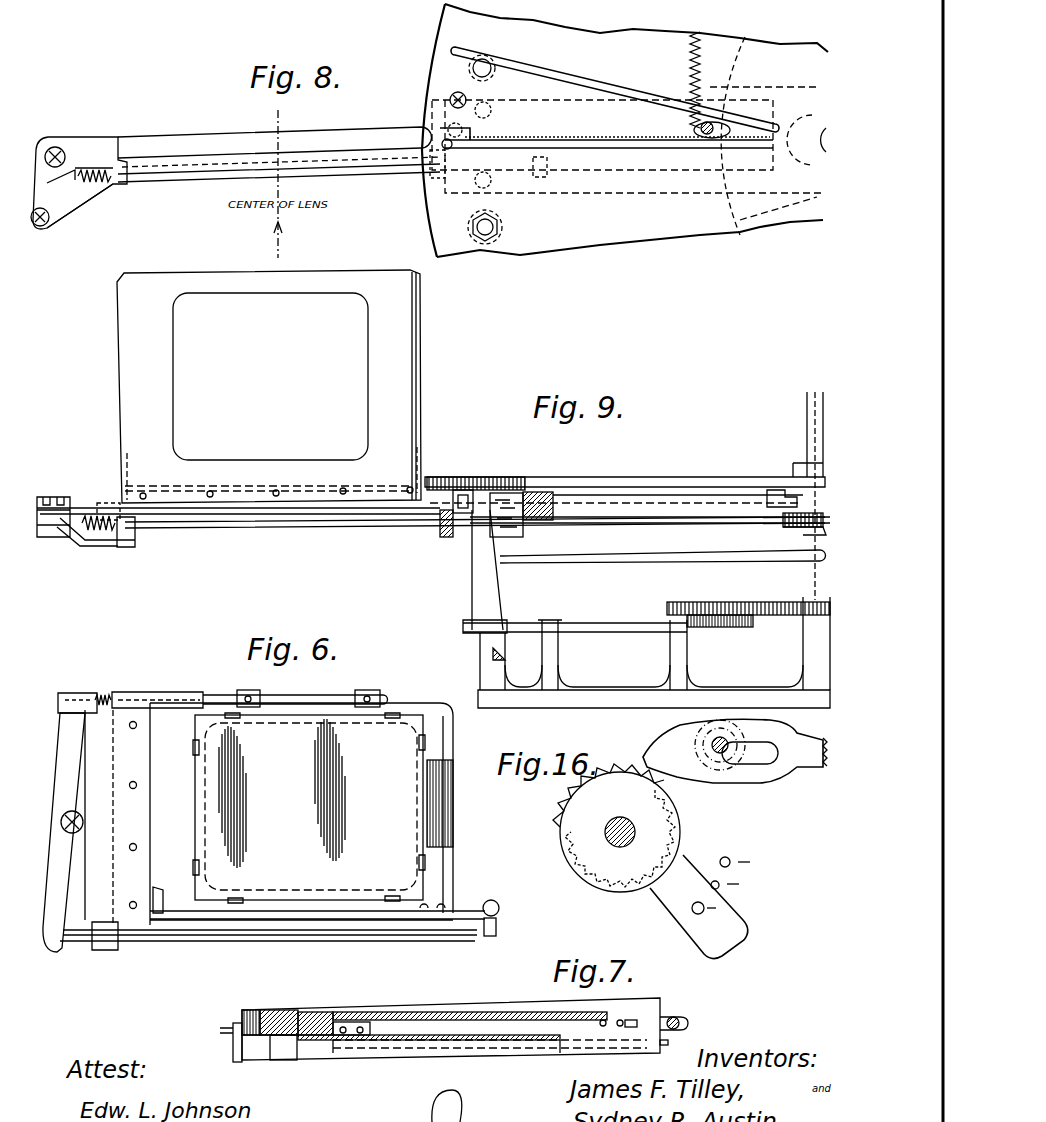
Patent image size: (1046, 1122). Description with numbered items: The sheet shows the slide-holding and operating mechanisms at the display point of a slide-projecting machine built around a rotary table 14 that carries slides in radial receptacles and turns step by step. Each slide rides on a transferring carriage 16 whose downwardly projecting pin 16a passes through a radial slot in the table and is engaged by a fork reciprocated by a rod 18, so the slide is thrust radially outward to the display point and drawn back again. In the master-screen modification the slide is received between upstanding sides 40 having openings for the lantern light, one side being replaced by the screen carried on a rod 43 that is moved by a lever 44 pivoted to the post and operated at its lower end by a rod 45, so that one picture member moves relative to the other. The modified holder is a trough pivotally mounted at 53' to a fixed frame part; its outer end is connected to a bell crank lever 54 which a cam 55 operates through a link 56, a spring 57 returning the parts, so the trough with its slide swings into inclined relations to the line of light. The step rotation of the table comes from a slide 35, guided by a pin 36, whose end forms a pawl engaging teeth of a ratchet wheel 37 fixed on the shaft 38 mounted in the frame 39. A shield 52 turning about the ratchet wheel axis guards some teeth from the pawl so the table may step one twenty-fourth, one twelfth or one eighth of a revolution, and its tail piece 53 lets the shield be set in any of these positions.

In FIG. 8, the rotary table 14 is at (578, 233).
In FIG. 9, the rotary table 14 is at (603, 466).
In FIG. 6, the transferring carriage 16 is at (325, 912).
In FIG. 7, the transferring carriage 16 is at (470, 1025).
In FIG. 6, the pin 16a is at (500, 923).
In FIG. 7, the pin 16a is at (667, 1020).
In FIG. 9, the rod 18 is at (625, 553).
In FIG. 16, the slide 35 is at (812, 757).
In FIG. 16, the pin 36 is at (725, 755).
In FIG. 16, the ratchet wheel 37 is at (580, 787).
In FIG. 16, the shaft 38 is at (605, 836).
In FIG. 9, the frame 39 is at (697, 512).
In FIG. 7, the upstanding sides 40 is at (377, 1042).
In FIG. 6, the rod 43 is at (222, 700).
In FIG. 6, the lever 44 is at (73, 760).
In FIG. 7, the lever 44 is at (233, 1030).
In FIG. 6, the rod 45 is at (183, 937).
In FIG. 16, the shield 52 is at (670, 790).
In FIG. 16, the tail piece 53 is at (715, 905).
In FIG. 8, the pivot 53' is at (414, 185).
In FIG. 9, the pivot 53' is at (476, 468).
In FIG. 8, the bell crank lever 54 is at (73, 157).
In FIG. 9, the bell crank lever 54 is at (77, 508).
In FIG. 8, the cam 55 is at (699, 193).
In FIG. 9, the cam 55 is at (718, 622).
In FIG. 8, the link 56 is at (77, 200).
In FIG. 9, the link 56 is at (92, 541).
In FIG. 8, the spring 57 is at (88, 186).
In FIG. 9, the spring 57 is at (107, 533).